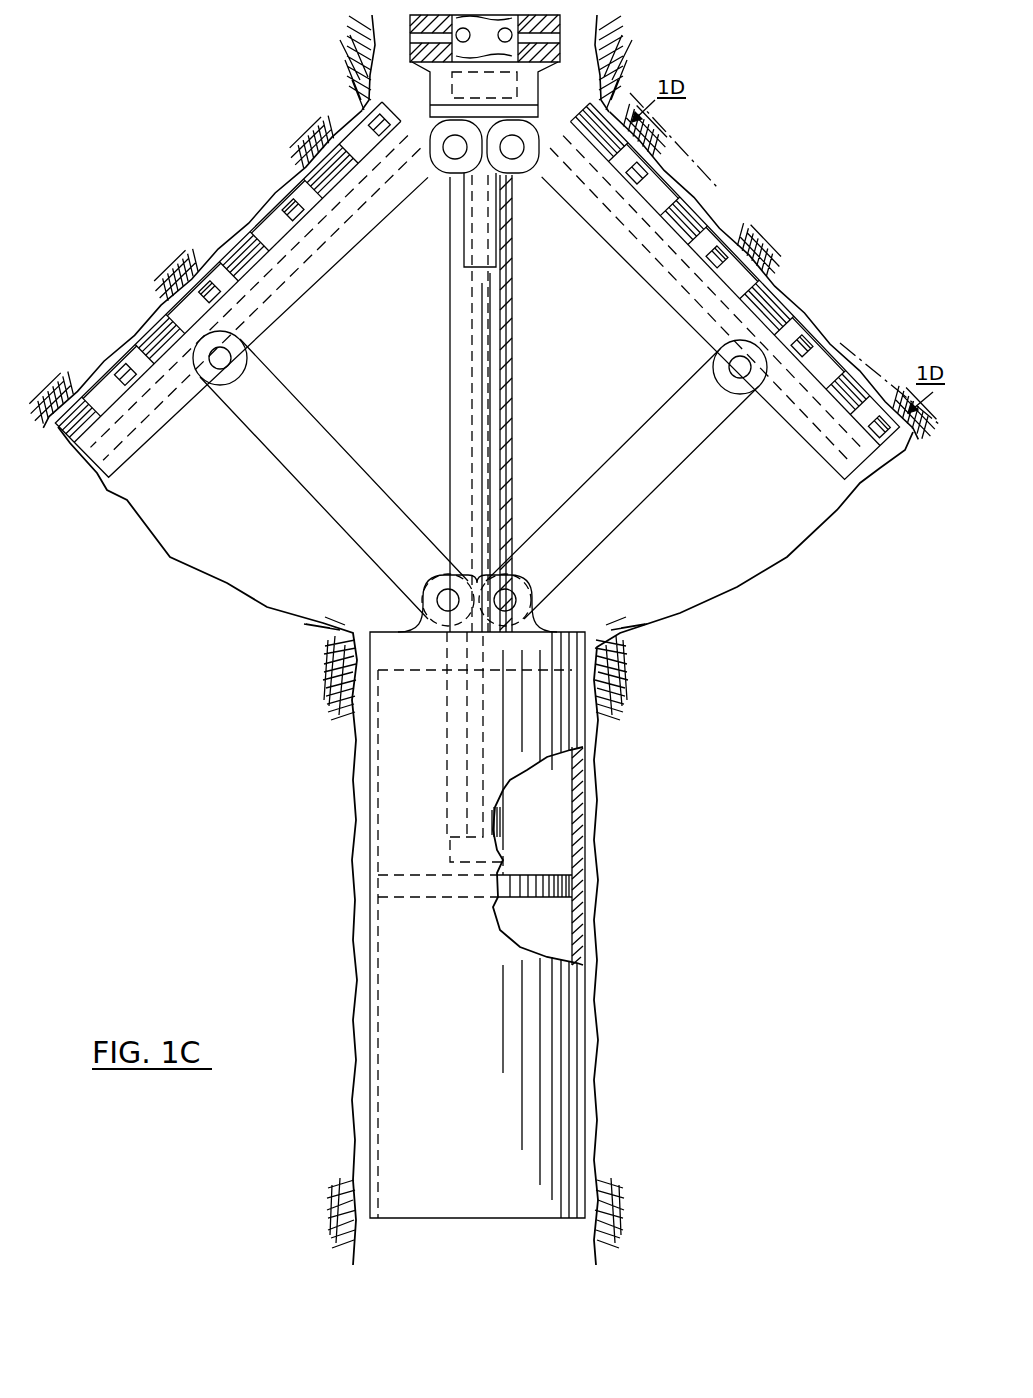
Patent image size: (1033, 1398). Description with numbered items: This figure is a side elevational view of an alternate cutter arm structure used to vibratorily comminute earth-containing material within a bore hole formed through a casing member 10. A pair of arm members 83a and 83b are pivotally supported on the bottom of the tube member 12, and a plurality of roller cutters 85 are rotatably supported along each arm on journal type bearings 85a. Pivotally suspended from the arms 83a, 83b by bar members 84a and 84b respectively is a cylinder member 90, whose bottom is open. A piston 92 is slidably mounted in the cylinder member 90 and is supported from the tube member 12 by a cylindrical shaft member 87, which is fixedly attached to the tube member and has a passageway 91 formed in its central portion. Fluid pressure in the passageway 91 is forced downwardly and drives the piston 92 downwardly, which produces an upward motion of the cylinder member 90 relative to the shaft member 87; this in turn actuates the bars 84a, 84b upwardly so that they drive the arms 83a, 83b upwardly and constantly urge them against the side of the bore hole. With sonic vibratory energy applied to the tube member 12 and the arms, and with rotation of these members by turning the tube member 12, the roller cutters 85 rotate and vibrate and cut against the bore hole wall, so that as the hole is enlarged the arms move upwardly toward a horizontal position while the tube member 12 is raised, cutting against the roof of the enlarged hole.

The casing member 10 is at (410, 33).
The tube member 12 is at (550, 64).
The arm member 83a is at (630, 268).
The arm member 83b is at (324, 272).
The bar member 84a is at (615, 508).
The bar member 84b is at (307, 472).
The roller cutter 85 is at (82, 400).
The journal type bearing 85a is at (243, 253).
The cylindrical shaft member 87 is at (500, 367).
The cylinder member 90 is at (408, 790).
The passageway 91 is at (477, 423).
The piston 92 is at (518, 883).